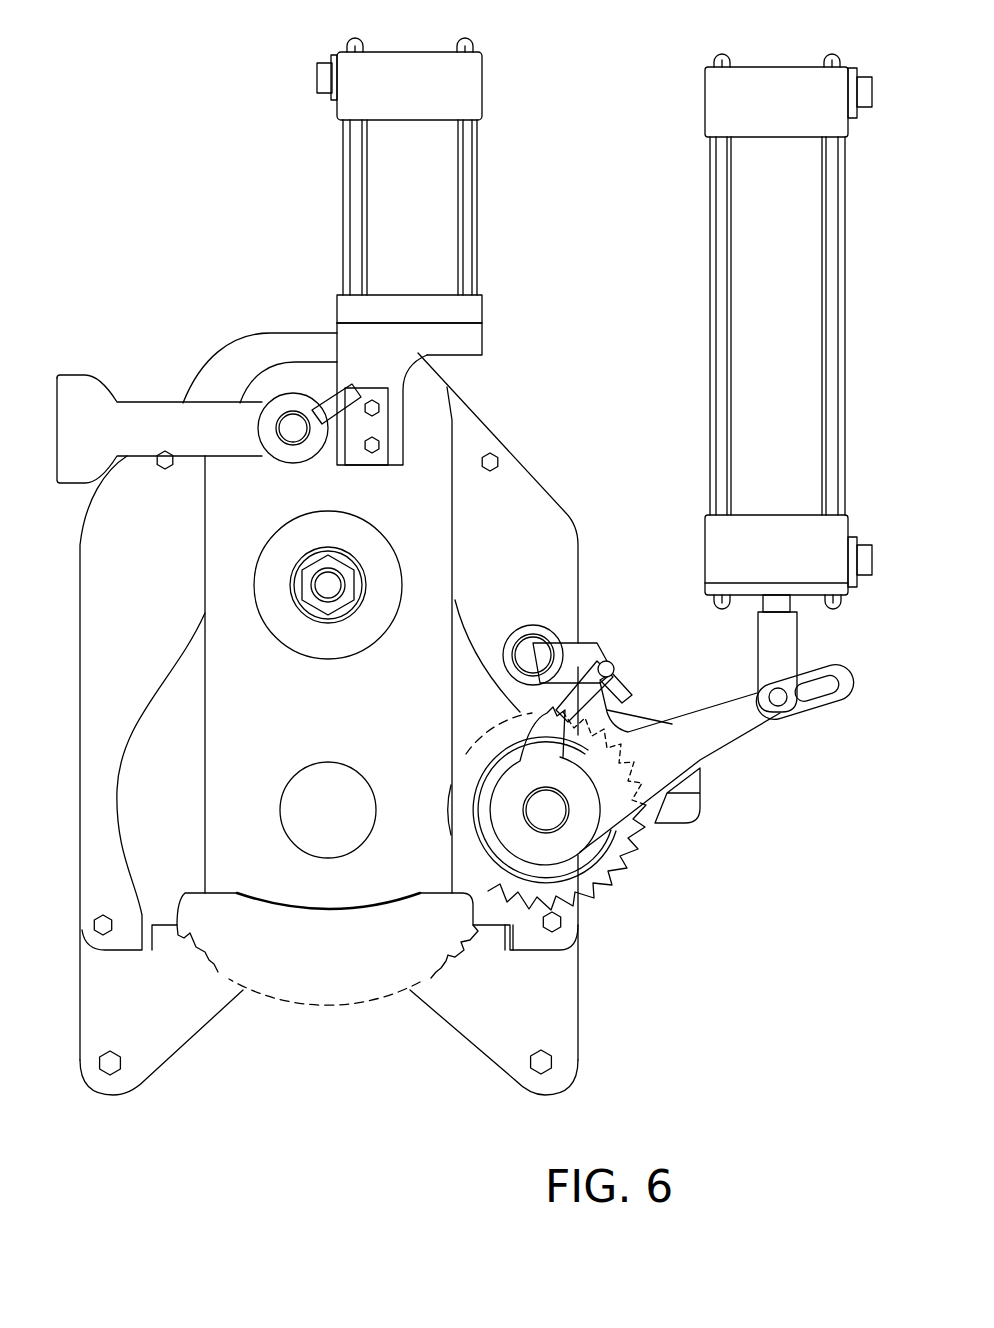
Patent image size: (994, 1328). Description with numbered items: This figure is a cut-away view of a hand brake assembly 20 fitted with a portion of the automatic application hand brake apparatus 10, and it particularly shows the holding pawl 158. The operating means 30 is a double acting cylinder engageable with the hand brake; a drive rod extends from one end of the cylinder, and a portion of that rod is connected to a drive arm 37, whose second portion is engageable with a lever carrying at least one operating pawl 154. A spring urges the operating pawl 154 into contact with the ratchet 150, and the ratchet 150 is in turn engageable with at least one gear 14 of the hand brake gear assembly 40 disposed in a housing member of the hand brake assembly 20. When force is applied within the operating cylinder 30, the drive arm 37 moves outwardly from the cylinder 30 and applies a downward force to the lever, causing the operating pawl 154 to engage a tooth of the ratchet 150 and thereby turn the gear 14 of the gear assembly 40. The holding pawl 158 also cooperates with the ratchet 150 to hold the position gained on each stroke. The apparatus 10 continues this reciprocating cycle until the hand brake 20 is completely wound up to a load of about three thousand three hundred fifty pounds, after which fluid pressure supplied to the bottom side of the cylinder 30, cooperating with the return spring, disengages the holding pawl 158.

The apparatus 10 is at (344, 556).
The gear 14 is at (197, 960).
The hand brake assembly 20 is at (209, 354).
The operating means 30 is at (695, 361).
The drive arm 37 is at (770, 648).
The hand brake gear assembly 40 is at (328, 964).
The ratchet 150 is at (610, 887).
The operating pawl 154 is at (680, 806).
The holding pawl 158 is at (620, 688).